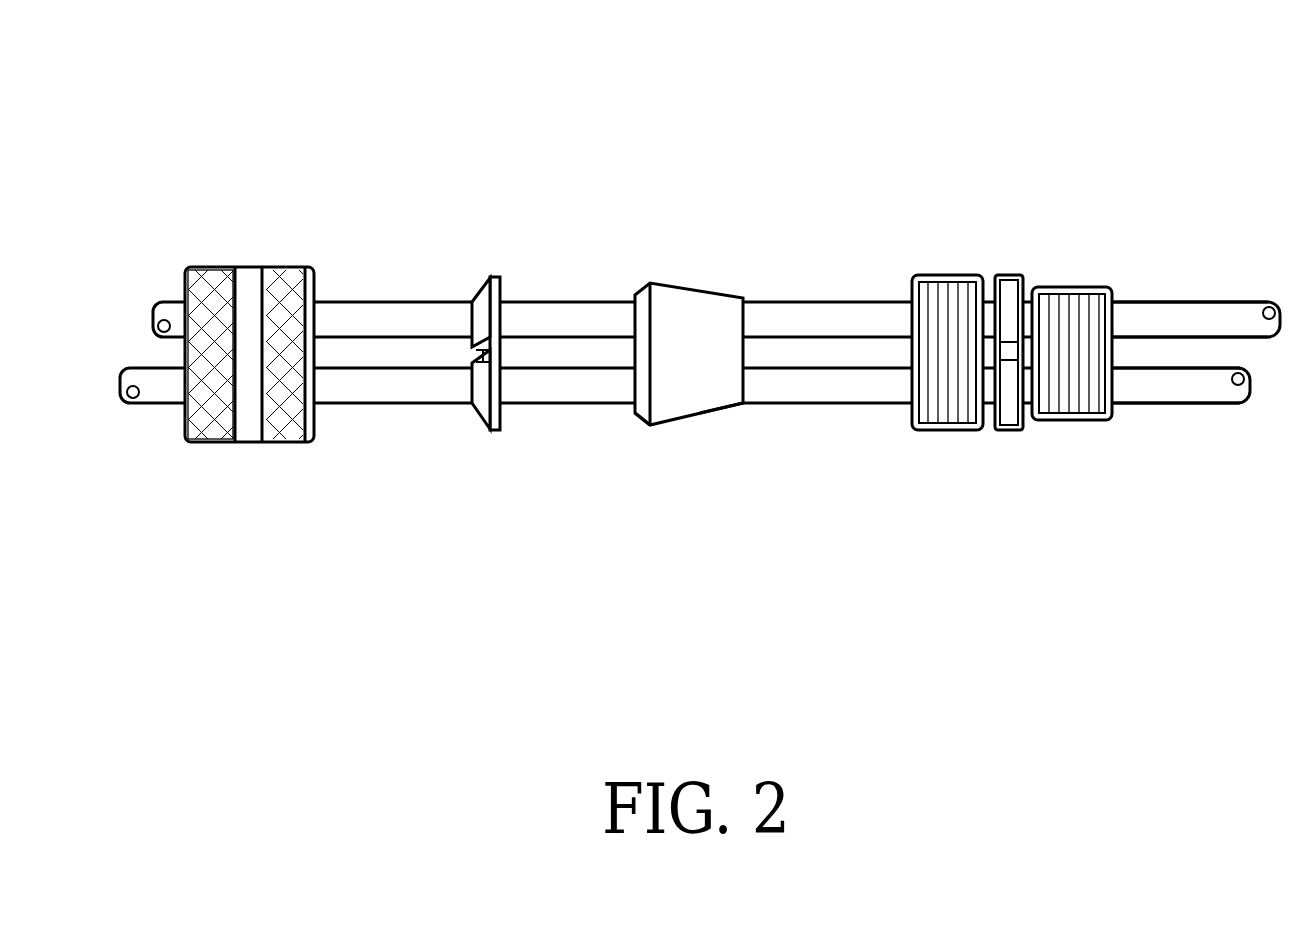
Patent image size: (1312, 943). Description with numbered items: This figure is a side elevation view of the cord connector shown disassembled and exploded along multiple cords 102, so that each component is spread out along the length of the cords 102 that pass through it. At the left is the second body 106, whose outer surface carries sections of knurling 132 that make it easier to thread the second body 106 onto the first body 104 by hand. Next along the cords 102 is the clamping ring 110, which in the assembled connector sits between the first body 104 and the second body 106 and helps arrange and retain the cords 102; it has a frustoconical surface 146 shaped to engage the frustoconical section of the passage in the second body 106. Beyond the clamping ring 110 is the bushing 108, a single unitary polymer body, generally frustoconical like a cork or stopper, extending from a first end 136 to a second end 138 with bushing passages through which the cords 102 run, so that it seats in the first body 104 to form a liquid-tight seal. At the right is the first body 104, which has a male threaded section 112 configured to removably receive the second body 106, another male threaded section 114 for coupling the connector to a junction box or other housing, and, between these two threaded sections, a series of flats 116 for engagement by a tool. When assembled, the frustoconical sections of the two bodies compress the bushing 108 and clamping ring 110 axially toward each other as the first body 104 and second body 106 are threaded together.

The cords 102 is at (702, 353).
The first body 104 is at (1005, 350).
The second body 106 is at (256, 354).
The bushing 108 is at (694, 339).
The clamping ring 110 is at (434, 386).
The male threaded section 112 is at (906, 434).
The male threaded section 114 is at (1106, 214).
The series of flats 116 is at (1044, 484).
The knurling 132 is at (247, 354).
The first end 136 is at (594, 462).
The second end 138 is at (775, 448).
The frustoconical surface 146 is at (429, 491).